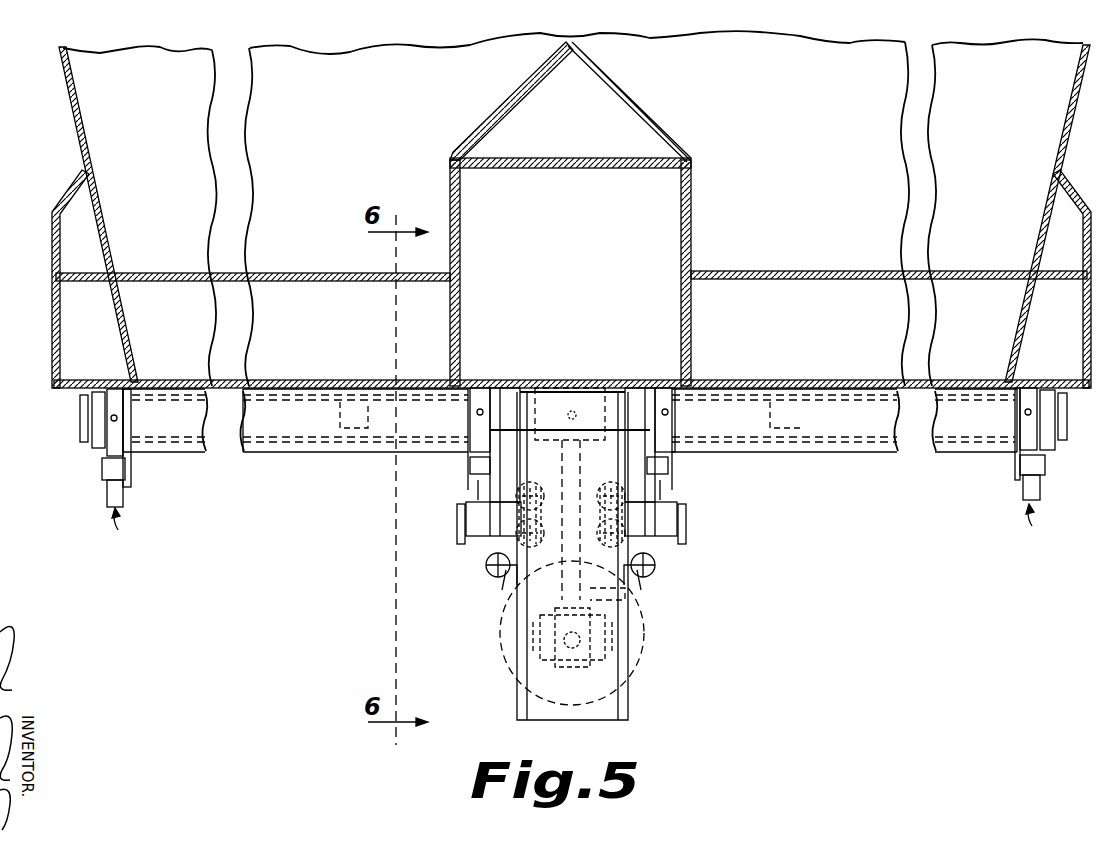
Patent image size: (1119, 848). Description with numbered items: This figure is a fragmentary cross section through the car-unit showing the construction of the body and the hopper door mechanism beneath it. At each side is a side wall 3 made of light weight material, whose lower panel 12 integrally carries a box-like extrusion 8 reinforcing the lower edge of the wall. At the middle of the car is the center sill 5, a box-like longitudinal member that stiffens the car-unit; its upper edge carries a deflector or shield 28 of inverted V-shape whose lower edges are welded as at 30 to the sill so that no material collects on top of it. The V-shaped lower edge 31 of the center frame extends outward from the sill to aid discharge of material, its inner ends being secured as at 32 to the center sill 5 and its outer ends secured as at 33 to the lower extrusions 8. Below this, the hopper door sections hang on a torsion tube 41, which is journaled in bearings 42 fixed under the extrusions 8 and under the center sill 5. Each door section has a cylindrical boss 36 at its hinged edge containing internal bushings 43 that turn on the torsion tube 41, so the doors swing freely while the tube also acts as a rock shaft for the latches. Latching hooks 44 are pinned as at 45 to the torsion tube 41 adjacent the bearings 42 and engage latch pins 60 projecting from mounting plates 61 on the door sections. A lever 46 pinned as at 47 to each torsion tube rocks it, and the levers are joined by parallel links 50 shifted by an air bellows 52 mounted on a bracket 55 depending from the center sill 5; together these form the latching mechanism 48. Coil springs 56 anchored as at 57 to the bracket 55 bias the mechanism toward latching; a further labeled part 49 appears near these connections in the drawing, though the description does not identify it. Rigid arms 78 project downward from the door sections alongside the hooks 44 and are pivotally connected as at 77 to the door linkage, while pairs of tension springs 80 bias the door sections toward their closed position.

The side wall 3 is at (68, 124).
The center sill 5 is at (596, 214).
The box-like extrusion 8 is at (52, 293).
The lower panel 12 is at (74, 97).
The deflector or shield 28 is at (626, 94).
The weld 30 is at (694, 156).
The V-shaped lower edge 31 is at (288, 274).
The inner end connection 32 is at (452, 283).
The outer end connection 33 is at (116, 271).
The cylindrical boss 36 is at (310, 452).
The torsion tube 41 is at (376, 410).
The bearing 42 is at (84, 452).
The internal bushing 43 is at (932, 448).
The latching hook 44 is at (688, 490).
The pin 45 is at (112, 418).
The lever 46 is at (630, 592).
The pin 47 is at (593, 384).
The latching mechanism 48 is at (610, 652).
The pivot bolt 49 is at (480, 562).
The link 50 is at (570, 664).
The air bellows 52 is at (642, 638).
The bracket 55 is at (612, 708).
The coil spring 56 is at (594, 593).
The spring anchor 57 is at (510, 566).
The latch pin 60 is at (102, 470).
The mounting plate 61 is at (130, 484).
The pivot connection 77 is at (462, 518).
The rigid arm 78 is at (458, 545).
The tension spring 80 is at (594, 500).